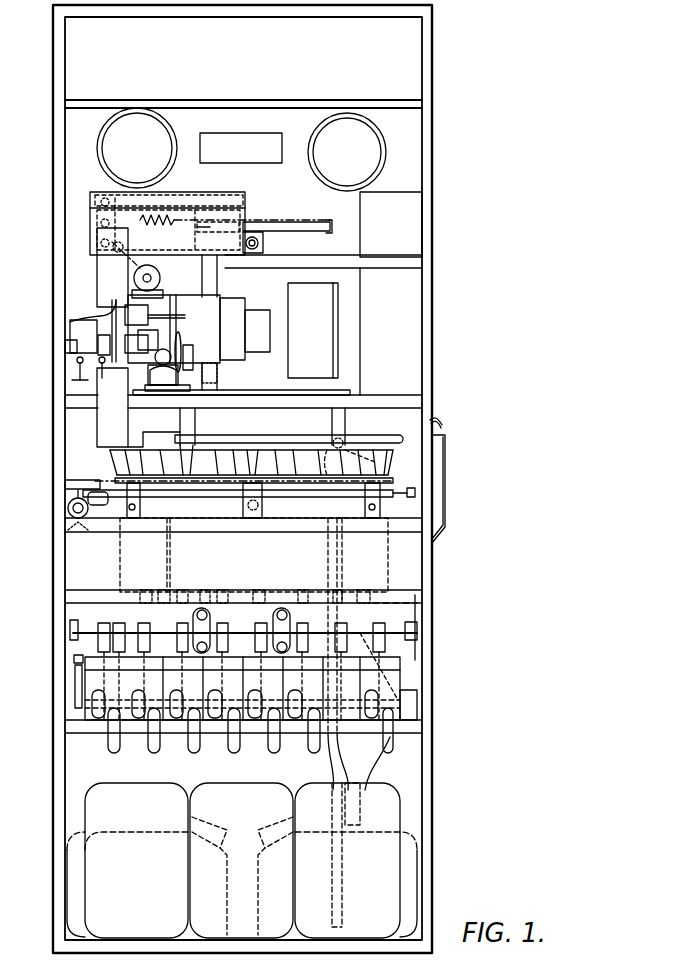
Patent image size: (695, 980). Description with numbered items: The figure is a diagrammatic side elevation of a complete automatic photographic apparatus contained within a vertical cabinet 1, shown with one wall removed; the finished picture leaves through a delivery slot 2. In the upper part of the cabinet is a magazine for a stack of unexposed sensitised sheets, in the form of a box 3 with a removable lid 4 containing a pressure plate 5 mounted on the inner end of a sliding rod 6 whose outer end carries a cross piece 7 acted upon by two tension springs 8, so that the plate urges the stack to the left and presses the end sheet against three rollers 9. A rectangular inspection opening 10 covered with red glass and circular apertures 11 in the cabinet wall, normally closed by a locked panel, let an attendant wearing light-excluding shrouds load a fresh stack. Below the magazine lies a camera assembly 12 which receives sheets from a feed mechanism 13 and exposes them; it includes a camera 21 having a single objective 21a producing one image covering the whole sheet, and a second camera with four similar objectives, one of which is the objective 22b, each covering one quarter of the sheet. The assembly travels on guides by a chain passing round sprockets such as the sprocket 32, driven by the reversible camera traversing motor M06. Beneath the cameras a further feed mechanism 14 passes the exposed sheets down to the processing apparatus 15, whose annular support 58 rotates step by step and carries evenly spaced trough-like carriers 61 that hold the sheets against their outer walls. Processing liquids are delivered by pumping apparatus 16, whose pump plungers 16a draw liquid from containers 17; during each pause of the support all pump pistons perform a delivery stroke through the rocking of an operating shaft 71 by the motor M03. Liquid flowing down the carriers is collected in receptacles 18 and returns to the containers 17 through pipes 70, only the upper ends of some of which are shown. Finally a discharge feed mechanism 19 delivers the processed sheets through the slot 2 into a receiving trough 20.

The vertical cabinet 1 is at (424, 202).
The delivery slot 2 is at (432, 421).
The box 3 is at (125, 215).
The removable lid 4 is at (200, 194).
The pressure plate 5 is at (200, 218).
The sliding rod 6 is at (275, 210).
The cross piece 7 is at (337, 212).
The tension springs 8 is at (170, 215).
The rollers 9 is at (90, 242).
The inspection opening 10 is at (248, 127).
The circular apertures 11 is at (150, 140).
The camera assembly 12 is at (70, 322).
The feed mechanism 13 is at (103, 268).
The further feed mechanism 14 is at (103, 415).
The processing apparatus 15 is at (123, 472).
The pumping apparatus 16 is at (93, 678).
The pump plungers 16a is at (417, 708).
The containers 17 is at (93, 883).
The receptacles 18 is at (375, 582).
The discharge feed mechanism 19 is at (368, 415).
The receiving trough 20 is at (443, 492).
The camera 21 is at (192, 298).
The single objective 21a is at (260, 312).
The objective 22b is at (183, 310).
The sprocket 32 is at (193, 333).
The annular support 58 is at (317, 498).
The carriers 61 is at (155, 457).
The pipes 70 is at (143, 607).
The operating shaft 71 is at (93, 633).
The camera traversing motor M06 is at (152, 370).
The pump motor M03 is at (417, 700).